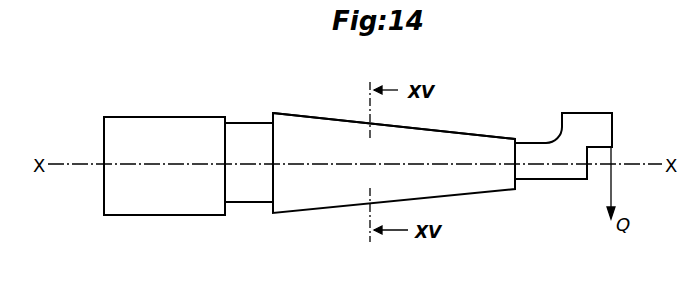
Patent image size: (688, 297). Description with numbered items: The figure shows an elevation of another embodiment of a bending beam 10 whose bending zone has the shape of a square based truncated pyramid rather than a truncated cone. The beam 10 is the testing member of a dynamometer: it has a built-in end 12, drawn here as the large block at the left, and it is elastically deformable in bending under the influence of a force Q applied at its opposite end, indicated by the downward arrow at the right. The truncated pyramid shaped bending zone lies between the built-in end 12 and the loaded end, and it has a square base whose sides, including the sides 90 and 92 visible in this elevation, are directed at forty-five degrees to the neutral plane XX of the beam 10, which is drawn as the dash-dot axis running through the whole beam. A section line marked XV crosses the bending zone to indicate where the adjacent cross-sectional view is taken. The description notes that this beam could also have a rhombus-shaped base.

The bending beam 10 is at (358, 181).
The built-in end 12 is at (170, 205).
The side of the square base 90 is at (300, 200).
The side of the square base 92 is at (323, 132).